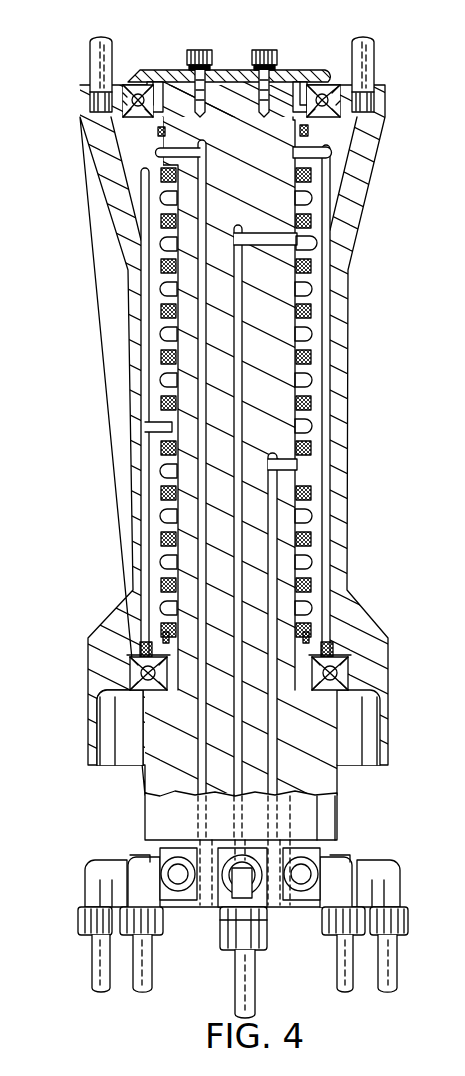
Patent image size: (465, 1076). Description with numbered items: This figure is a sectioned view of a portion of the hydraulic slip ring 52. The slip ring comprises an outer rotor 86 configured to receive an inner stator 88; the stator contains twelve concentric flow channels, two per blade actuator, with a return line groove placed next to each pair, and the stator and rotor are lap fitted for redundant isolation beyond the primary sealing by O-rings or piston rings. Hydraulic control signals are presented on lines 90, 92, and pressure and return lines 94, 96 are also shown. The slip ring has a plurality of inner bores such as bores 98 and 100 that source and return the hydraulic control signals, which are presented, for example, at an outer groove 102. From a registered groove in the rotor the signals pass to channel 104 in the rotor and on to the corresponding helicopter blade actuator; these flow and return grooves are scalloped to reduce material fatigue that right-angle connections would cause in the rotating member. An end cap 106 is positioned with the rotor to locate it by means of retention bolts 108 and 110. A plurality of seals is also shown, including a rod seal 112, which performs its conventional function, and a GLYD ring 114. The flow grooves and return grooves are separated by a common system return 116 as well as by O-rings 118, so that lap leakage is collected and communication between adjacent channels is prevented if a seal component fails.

The hydraulic slip ring 52 is at (84, 298).
The outer rotor 86 is at (103, 193).
The inner stator 88 is at (145, 812).
The hydraulic control signal line 90 is at (152, 962).
The hydraulic control signal line 92 is at (337, 955).
The pressure line 94 is at (93, 955).
The return line 96 is at (393, 960).
The inner bore 98 is at (203, 742).
The inner bore 100 is at (273, 742).
The outer groove 102 is at (157, 150).
The channel 104 is at (122, 140).
The end cap 106 is at (293, 80).
The retention bolt 108 is at (265, 50).
The retention bolt 110 is at (196, 50).
The rod seal 112 is at (310, 129).
The GLYD ring 114 is at (330, 142).
The common system return 116 is at (303, 237).
The O-ring 118 is at (306, 195).